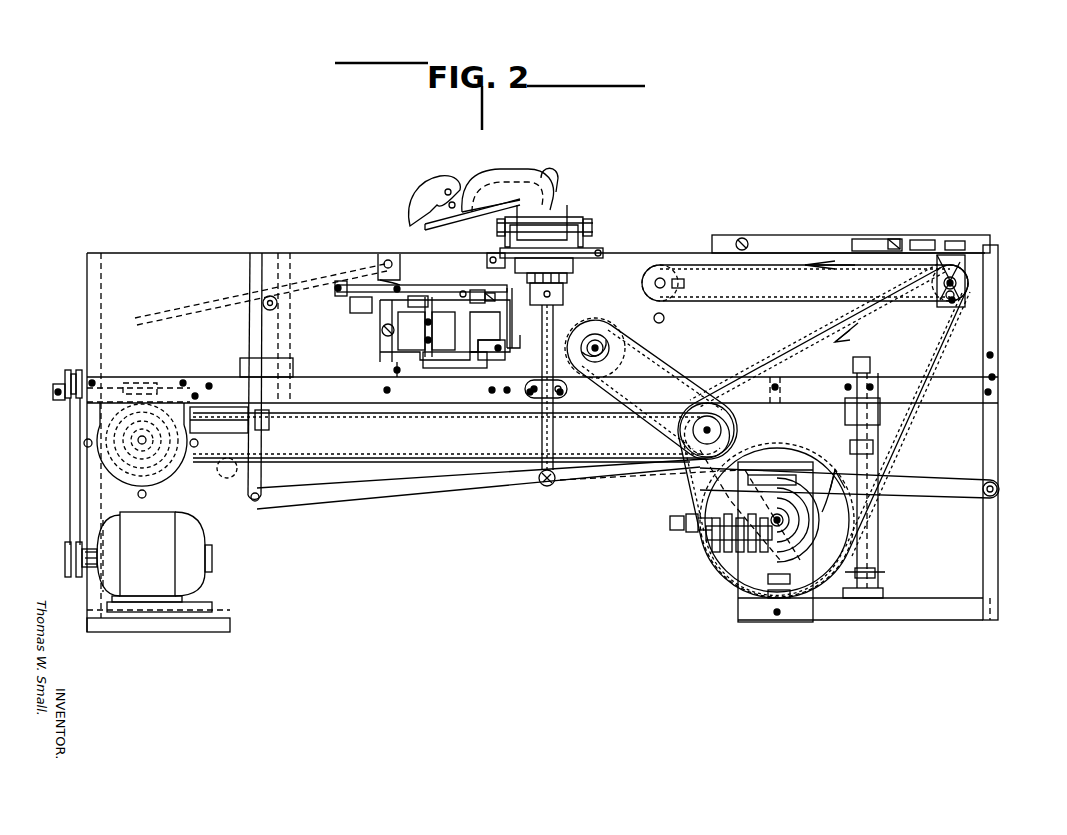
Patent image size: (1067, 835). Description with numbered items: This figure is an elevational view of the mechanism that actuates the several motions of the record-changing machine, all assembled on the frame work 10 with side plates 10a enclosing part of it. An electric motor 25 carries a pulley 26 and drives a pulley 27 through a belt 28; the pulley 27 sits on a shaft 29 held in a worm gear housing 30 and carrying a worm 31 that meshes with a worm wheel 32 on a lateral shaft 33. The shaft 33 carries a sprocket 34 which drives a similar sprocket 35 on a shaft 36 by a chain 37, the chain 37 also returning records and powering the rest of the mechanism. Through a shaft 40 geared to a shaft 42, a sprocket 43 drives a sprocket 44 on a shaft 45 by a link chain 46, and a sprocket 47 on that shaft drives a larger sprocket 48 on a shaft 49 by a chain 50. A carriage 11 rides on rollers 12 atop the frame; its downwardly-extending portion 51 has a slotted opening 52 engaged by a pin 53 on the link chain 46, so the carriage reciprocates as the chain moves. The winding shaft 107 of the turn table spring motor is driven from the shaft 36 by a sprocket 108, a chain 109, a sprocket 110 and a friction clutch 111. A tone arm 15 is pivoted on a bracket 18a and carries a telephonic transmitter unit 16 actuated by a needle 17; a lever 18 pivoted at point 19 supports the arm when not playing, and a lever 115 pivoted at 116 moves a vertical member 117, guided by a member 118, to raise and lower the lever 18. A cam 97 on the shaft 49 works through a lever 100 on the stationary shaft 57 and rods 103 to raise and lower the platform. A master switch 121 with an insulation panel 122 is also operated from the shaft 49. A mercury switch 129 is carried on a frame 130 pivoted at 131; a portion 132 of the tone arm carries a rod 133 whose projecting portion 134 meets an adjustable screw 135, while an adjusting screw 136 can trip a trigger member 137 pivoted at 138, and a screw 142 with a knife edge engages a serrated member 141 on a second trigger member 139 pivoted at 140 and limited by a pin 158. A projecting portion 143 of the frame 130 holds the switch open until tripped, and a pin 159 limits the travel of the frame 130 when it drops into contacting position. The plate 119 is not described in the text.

The frame work 10 is at (998, 428).
The side plates 10a is at (160, 262).
The carriage 11 is at (790, 235).
The rollers 12 is at (743, 238).
The rail plate 119 is at (860, 239).
The slotted opening 52 is at (962, 256).
The downwardly-extending portion 51 is at (968, 266).
The sprocket 47 is at (966, 280).
The shaft 45 is at (966, 292).
The pin 53 is at (962, 300).
The tone arm 15 is at (518, 174).
The telephonic transmitter unit 16 is at (423, 198).
The needle 17 is at (425, 228).
The lever 18 is at (558, 180).
The bracket 18a is at (490, 254).
The pivot point 19 is at (592, 230).
The portion of the tone arm 132 is at (527, 268).
The adjustable screw 135 is at (338, 281).
The downwardly-projecting portion 134 is at (365, 297).
The screw 142 is at (382, 253).
The serrated member 141 is at (412, 296).
The rod 133 is at (432, 285).
The adjusting screw 136 is at (466, 290).
The pivot 131 is at (382, 330).
The frame 130 is at (382, 352).
The pin 159 is at (395, 371).
The pivot 140 is at (414, 331).
The pin 158 is at (446, 327).
The projecting portion 143 is at (489, 331).
The trigger member 137 is at (512, 318).
The pivot 138 is at (500, 357).
The second trigger member 139 is at (462, 368).
The winding shaft 107 is at (592, 340).
The shaft 42 is at (655, 285).
The sprocket 43 is at (684, 284).
The shaft 40 is at (664, 320).
The link chain 46 is at (775, 302).
The sprocket 44 is at (922, 295).
The chain 109 is at (670, 368).
The sprocket 35 is at (712, 400).
The sprocket 108 is at (732, 393).
The sprocket 110 is at (612, 355).
The shaft 36 is at (682, 418).
The stationary shaft 57 is at (660, 452).
The guide member 118 is at (530, 415).
The vertical member 117 is at (542, 437).
The friction clutch 111 is at (576, 403).
The mercury switch 129 is at (413, 405).
The chain 37 is at (345, 458).
The rod 103 is at (270, 452).
The lever 100 is at (463, 498).
The chain 50 is at (896, 430).
The pivot 116 is at (998, 490).
The lever 115 is at (962, 495).
The larger sprocket 48 is at (850, 520).
The cam 97 is at (790, 534).
The shaft 49 is at (740, 560).
The insulation panel 122 is at (802, 622).
The master switch 121 is at (815, 590).
The electric motor 25 is at (195, 577).
The pulley 26 is at (68, 577).
The belt 28 is at (70, 488).
The shaft 33 is at (142, 440).
The sprocket 34 is at (118, 430).
The shaft 29 is at (53, 400).
The pulley 27 is at (65, 378).
The worm gear housing 30 is at (110, 378).
The worm 31 is at (148, 384).
The worm wheel 32 is at (226, 471).